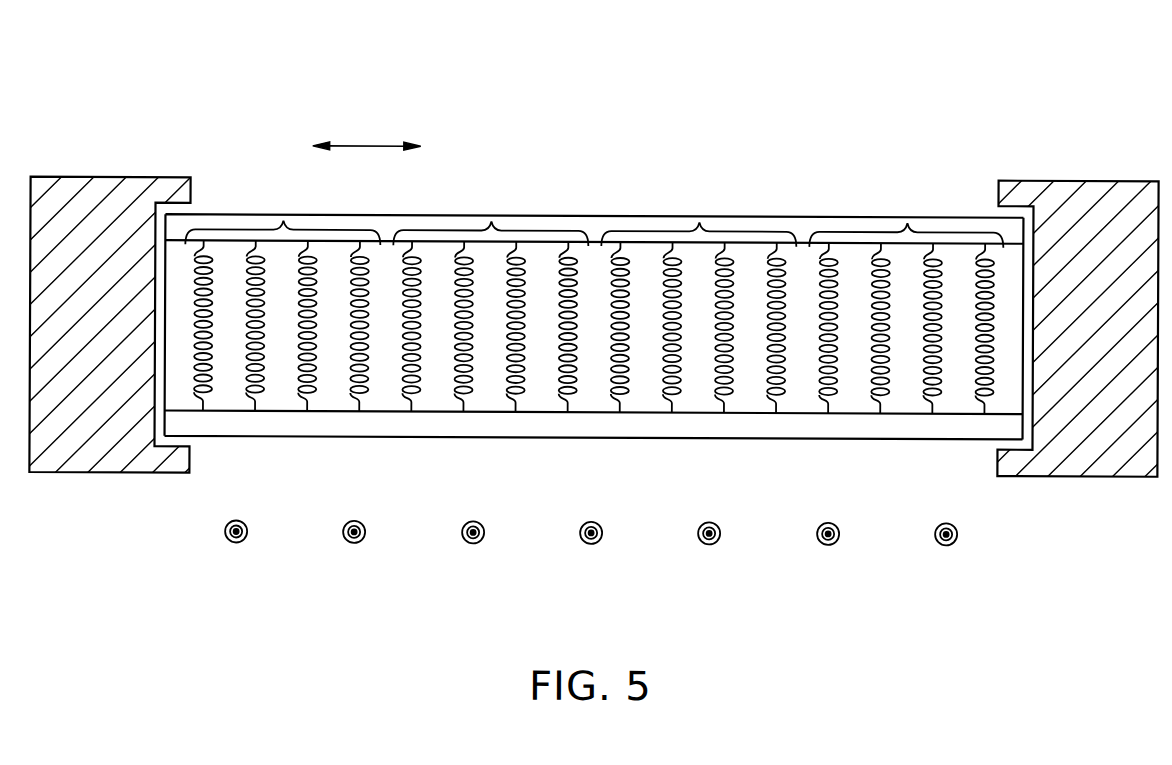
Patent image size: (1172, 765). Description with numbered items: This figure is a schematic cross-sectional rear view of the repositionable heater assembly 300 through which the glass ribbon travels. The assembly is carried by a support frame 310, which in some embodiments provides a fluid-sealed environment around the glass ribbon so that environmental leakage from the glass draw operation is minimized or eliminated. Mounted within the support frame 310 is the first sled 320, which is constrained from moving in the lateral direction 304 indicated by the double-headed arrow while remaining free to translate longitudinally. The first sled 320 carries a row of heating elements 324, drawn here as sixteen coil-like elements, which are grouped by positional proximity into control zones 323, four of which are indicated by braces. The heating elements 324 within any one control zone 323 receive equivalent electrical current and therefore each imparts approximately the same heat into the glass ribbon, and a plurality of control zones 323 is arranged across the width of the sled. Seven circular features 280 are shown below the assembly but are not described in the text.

The repositionable heater assembly 300 is at (975, 91).
The support frame 310 is at (1060, 179).
The first sled 320 is at (592, 205).
The lateral direction 304 is at (370, 147).
The control zone 323 is at (283, 222).
The heating elements 324 is at (823, 403).
The fastener targets 280 is at (576, 561).